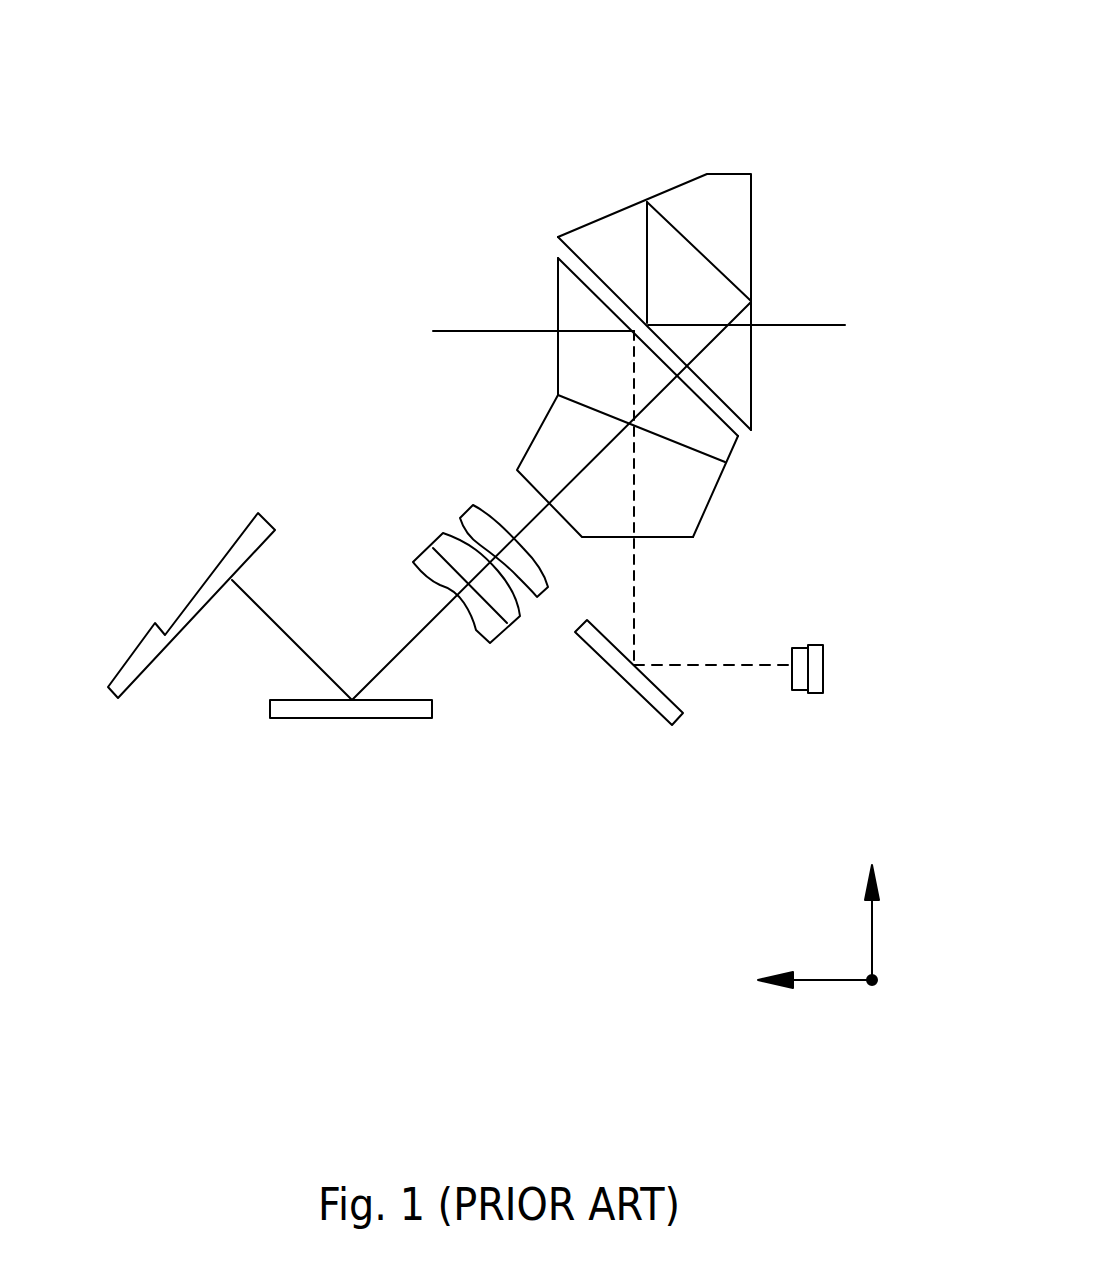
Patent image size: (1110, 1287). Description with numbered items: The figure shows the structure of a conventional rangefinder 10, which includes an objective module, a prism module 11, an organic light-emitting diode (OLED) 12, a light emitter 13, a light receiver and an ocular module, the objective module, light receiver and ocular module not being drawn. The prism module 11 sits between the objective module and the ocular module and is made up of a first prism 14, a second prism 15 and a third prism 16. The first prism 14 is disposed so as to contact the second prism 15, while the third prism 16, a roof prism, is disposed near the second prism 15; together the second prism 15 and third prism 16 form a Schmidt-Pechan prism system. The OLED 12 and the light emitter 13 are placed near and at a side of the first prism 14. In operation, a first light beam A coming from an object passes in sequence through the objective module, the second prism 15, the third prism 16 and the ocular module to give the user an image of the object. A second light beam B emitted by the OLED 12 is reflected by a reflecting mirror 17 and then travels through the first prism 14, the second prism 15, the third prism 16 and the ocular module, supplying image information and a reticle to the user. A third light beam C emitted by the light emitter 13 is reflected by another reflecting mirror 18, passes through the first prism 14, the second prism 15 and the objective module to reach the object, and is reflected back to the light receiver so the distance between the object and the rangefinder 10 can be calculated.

The rangefinder 10 is at (119, 46).
The prism module 11 is at (652, 148).
The organic light-emitting diode 12 is at (188, 603).
The light emitter 13 is at (818, 670).
The first prism 14 is at (680, 508).
The second prism 15 is at (703, 445).
The third prism 16 is at (725, 358).
The reflecting mirror 17 is at (293, 707).
The reflecting mirror 18 is at (610, 658).
The first light beam A is at (463, 331).
The second light beam B is at (310, 658).
The third light beam C is at (732, 665).